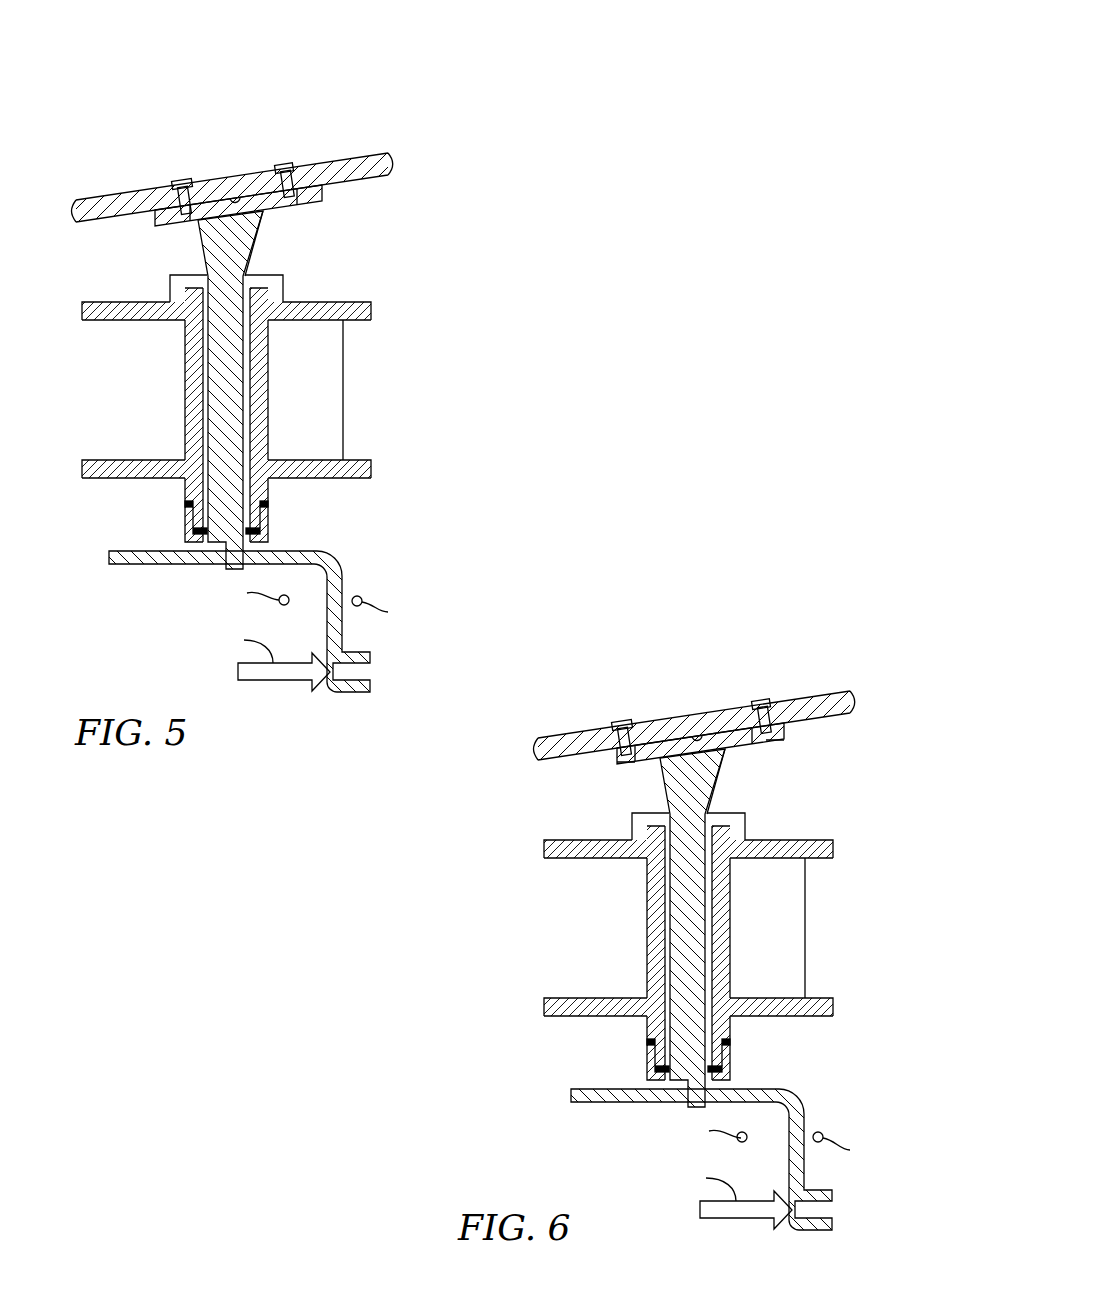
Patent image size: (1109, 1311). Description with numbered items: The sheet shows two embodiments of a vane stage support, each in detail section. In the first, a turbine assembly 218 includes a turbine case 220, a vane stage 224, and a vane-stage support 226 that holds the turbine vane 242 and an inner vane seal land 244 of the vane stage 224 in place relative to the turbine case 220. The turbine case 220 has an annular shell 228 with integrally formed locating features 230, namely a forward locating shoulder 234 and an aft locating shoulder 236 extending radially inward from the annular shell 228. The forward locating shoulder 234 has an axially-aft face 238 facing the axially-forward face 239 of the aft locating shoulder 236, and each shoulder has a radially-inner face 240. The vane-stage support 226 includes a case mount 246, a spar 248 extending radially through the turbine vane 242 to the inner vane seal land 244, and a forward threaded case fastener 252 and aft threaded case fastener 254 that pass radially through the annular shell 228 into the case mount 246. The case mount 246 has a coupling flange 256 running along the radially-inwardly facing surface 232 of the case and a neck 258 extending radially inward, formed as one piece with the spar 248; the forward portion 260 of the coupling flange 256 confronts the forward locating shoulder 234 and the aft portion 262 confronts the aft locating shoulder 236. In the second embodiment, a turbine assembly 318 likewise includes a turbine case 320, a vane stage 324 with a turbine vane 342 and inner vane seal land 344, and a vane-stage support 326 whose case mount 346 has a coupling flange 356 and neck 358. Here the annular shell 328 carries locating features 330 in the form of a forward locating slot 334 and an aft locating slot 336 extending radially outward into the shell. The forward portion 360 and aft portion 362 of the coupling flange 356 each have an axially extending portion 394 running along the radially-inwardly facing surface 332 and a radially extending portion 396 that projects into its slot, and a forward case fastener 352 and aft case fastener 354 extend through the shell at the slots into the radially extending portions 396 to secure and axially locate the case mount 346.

In FIG. 5, the turbine assembly 218 is at (75, 116).
In FIG. 5, the turbine case 220 is at (382, 134).
In FIG. 5, the vane stage 224 is at (138, 505).
In FIG. 5, the vane-stage support 226 is at (467, 258).
In FIG. 5, the annular shell 228 is at (258, 188).
In FIG. 5, the locating features 230 is at (340, 50).
In FIG. 5, the radially-inwardly facing surface 232 is at (227, 186).
In FIG. 5, the forward locating shoulder 234 is at (153, 190).
In FIG. 5, the aft locating shoulder 236 is at (296, 165).
In FIG. 5, the axially-aft face 238 is at (182, 184).
In FIG. 5, the axially-forward face 239 is at (284, 168).
In FIG. 5, the radially-inner face 240 is at (315, 203).
In FIG. 5, the turbine vane 242 is at (366, 390).
In FIG. 5, the inner vane seal land 244 is at (158, 615).
In FIG. 5, the case mount 246 is at (353, 240).
In FIG. 5, the spar 248 is at (312, 288).
In FIG. 5, the forward threaded case fastener 252 is at (185, 200).
In FIG. 5, the aft threaded case fastener 254 is at (288, 183).
In FIG. 5, the coupling flange 256 is at (143, 224).
In FIG. 5, the neck 258 is at (286, 258).
In FIG. 5, the forward portion 260 is at (175, 230).
In FIG. 5, the aft portion 262 is at (275, 224).
In FIG. 6, the turbine assembly 318 is at (610, 594).
In FIG. 6, the turbine case 320 is at (838, 668).
In FIG. 6, the vane stage 324 is at (601, 1044).
In FIG. 6, the vane-stage support 326 is at (494, 806).
In FIG. 6, the annular shell 328 is at (721, 710).
In FIG. 6, the locating features 330 is at (812, 588).
In FIG. 6, the radially-inwardly facing surface 332 is at (686, 722).
In FIG. 6, the forward locating slot 334 is at (599, 730).
In FIG. 6, the aft locating slot 336 is at (781, 696).
In FIG. 6, the turbine vane 342 is at (824, 928).
In FIG. 6, the inner vane seal land 344 is at (644, 1149).
In FIG. 6, the case mount 346 is at (836, 806).
In FIG. 6, the forward case fastener 352 is at (621, 722).
In FIG. 6, the aft case fastener 354 is at (759, 699).
In FIG. 6, the coupling flange 356 is at (806, 733).
In FIG. 6, the neck 358 is at (604, 807).
In FIG. 6, the forward portion 360 is at (611, 771).
In FIG. 6, the aft portion 362 is at (772, 754).
In FIG. 6, the axially extending portion 394 is at (744, 750).
In FIG. 6, the radially extending portion 396 is at (606, 757).